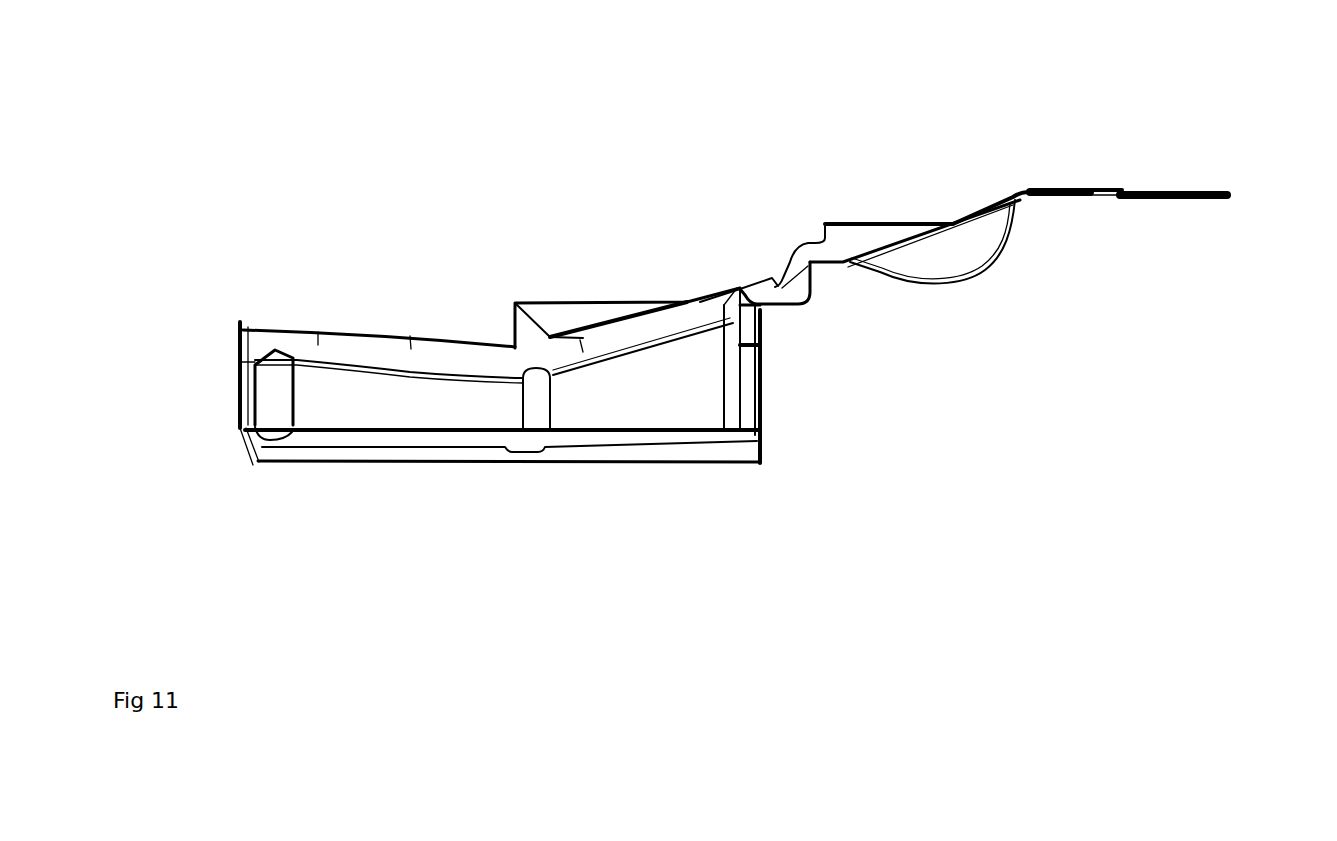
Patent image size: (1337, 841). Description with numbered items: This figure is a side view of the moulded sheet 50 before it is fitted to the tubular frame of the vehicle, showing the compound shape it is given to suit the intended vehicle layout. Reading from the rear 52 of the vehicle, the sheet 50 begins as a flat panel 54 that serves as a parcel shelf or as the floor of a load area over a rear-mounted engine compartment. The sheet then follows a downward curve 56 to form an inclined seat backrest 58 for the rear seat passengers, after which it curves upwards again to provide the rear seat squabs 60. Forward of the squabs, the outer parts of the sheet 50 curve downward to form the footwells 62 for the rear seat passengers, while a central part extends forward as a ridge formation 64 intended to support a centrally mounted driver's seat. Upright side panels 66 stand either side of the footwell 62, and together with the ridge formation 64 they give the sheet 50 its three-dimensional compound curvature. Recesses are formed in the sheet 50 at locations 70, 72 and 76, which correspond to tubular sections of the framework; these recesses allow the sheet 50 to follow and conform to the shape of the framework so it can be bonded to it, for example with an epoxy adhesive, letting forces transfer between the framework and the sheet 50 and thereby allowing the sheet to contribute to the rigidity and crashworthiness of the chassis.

The sheet 50 is at (758, 243).
The rear 52 is at (1232, 196).
The flat panel 54 is at (1086, 188).
The downward curve 56 is at (1013, 192).
The inclined seat backrest 58 is at (988, 248).
The rear seat squabs 60 is at (900, 283).
The footwells 62 is at (740, 379).
The ridge formation 64 is at (627, 264).
The upright side panels 66 is at (657, 393).
The recess location 70 is at (536, 412).
The recess location 72 is at (275, 395).
The recess location 76 is at (373, 343).